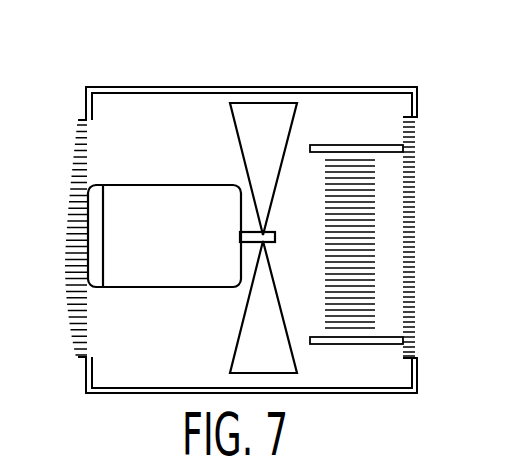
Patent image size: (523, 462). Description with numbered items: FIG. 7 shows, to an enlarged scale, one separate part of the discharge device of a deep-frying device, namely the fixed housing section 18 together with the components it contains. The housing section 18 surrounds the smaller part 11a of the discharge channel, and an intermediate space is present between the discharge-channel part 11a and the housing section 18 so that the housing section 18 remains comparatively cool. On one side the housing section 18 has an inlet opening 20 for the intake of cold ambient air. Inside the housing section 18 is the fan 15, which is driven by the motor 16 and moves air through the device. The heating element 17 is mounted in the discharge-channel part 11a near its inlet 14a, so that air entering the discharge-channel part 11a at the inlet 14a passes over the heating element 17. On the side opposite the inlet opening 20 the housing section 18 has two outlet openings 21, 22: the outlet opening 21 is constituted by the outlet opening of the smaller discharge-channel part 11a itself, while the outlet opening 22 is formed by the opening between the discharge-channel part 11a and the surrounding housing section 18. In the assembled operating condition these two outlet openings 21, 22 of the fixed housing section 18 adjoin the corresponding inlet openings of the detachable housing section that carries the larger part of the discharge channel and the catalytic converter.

The smaller part of the discharge channel 11a is at (401, 183).
The inlet 14a is at (302, 193).
The fan 15 is at (260, 128).
The motor 16 is at (169, 252).
The heating element 17 is at (370, 282).
The housing section 18 is at (118, 87).
The inlet opening 20 is at (75, 333).
The outlet opening 21 is at (410, 247).
The outlet opening 22 is at (410, 132).